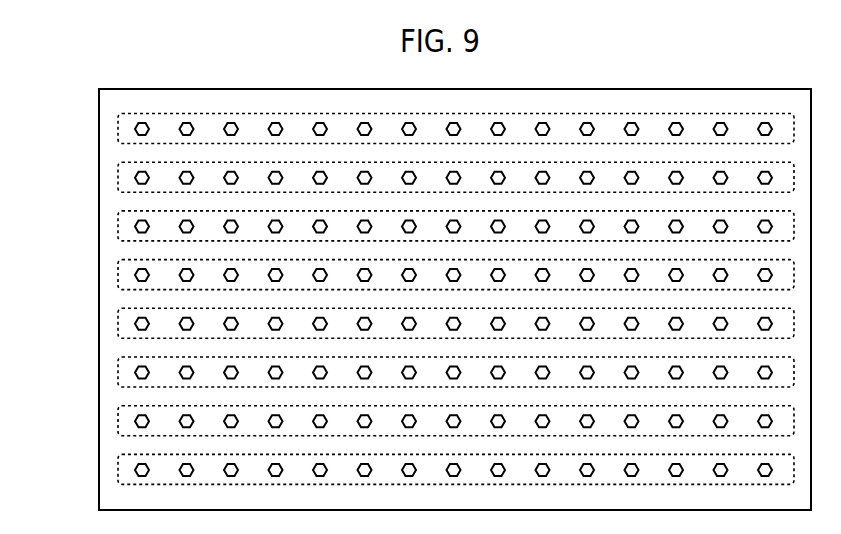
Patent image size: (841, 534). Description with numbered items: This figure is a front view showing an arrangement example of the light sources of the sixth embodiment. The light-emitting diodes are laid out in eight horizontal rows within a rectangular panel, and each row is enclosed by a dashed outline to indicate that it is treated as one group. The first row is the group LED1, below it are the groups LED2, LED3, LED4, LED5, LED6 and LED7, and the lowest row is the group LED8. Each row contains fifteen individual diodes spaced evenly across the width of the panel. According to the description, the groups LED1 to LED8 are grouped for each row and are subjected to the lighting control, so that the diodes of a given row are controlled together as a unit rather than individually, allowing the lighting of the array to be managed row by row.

The element LED1 is at (411, 129).
The element LED2 is at (411, 177).
The element LED3 is at (411, 226).
The element LED4 is at (411, 275).
The element LED5 is at (411, 323).
The element LED6 is at (411, 372).
The element LED7 is at (411, 421).
The element LED8 is at (411, 469).